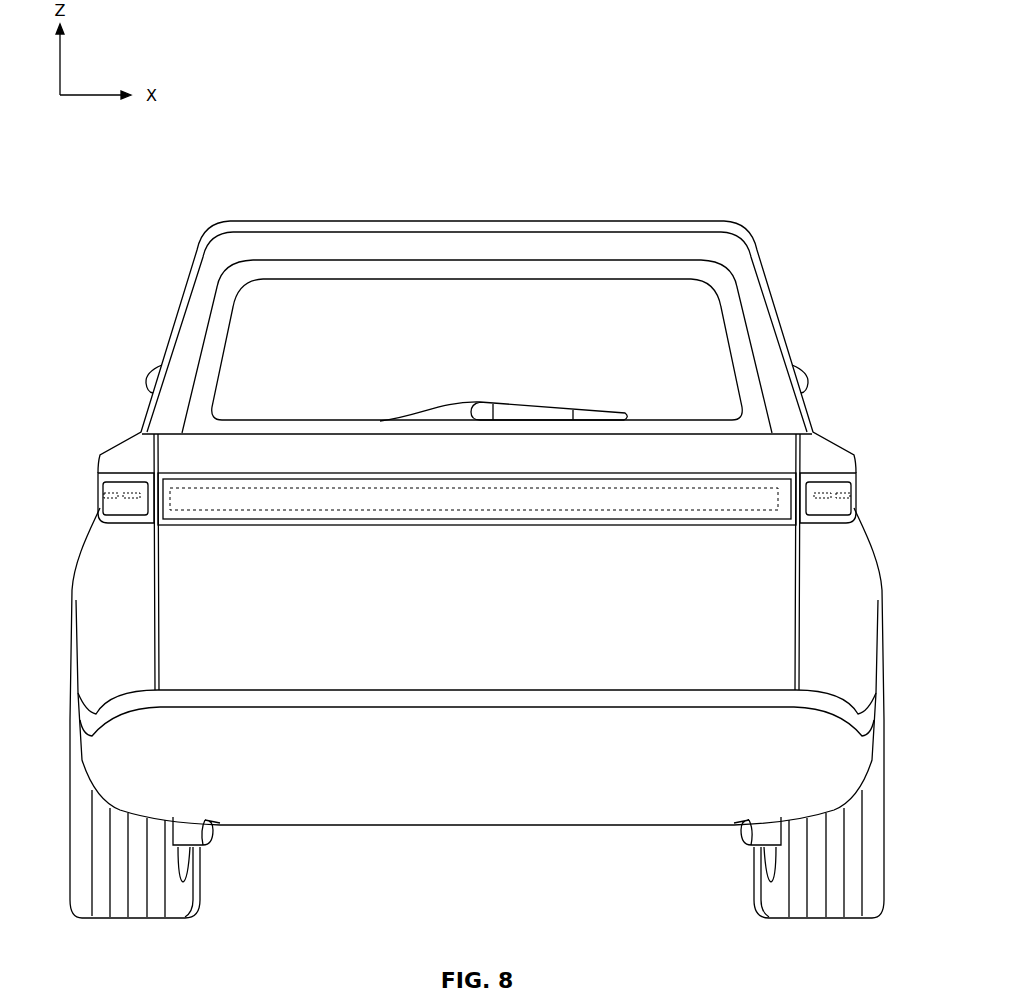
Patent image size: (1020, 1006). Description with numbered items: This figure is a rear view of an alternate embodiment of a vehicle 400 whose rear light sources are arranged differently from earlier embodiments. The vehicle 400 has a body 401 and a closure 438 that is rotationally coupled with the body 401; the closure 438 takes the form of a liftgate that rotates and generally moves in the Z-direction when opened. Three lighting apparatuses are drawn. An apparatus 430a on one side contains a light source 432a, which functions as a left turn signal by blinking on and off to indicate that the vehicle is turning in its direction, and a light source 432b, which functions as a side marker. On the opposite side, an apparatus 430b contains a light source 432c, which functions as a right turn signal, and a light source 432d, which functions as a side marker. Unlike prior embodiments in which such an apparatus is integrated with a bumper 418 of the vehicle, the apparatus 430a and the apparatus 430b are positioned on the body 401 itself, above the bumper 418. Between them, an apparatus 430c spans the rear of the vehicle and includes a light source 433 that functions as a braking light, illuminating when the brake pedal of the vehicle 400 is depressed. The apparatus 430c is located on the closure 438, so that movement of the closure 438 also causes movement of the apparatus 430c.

The vehicle 400 is at (197, 200).
The body 401 is at (520, 221).
The apparatus 430a is at (104, 473).
The apparatus 430b is at (838, 473).
The apparatus 430c is at (156, 519).
The light source 432a is at (124, 498).
The light source 432b is at (100, 496).
The light source 432c is at (826, 499).
The light source 432d is at (854, 496).
The light source 433 is at (722, 508).
The closure 438 is at (470, 623).
The bumper 418 is at (475, 781).